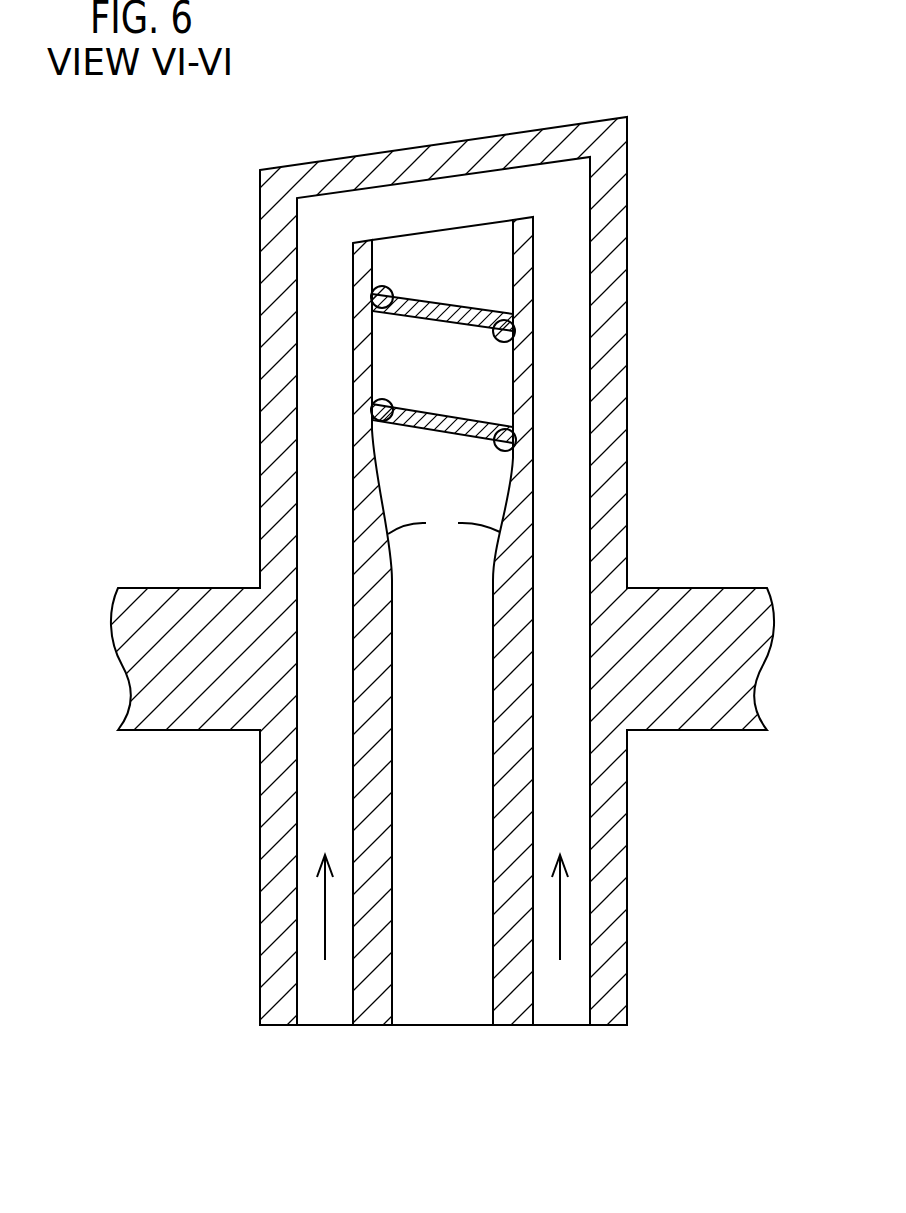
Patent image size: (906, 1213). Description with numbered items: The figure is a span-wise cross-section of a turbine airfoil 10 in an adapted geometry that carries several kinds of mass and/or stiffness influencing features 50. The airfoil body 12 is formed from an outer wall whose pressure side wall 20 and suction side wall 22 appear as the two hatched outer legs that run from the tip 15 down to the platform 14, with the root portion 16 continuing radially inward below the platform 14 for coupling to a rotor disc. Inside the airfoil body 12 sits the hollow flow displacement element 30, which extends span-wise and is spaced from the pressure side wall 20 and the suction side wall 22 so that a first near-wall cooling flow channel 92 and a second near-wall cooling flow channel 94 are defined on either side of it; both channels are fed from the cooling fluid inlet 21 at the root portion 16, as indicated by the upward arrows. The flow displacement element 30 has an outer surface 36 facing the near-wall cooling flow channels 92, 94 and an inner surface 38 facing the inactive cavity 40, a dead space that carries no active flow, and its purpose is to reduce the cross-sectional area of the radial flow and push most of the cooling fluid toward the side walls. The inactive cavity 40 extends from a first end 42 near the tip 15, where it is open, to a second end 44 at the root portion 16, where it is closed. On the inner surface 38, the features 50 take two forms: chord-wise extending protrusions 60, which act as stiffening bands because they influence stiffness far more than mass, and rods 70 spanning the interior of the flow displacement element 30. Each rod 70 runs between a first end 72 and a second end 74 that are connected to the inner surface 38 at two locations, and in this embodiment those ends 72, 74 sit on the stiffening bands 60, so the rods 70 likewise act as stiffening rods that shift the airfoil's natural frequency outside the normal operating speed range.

The turbine airfoil 10 is at (685, 72).
The airfoil body 12 is at (243, 220).
The platform 14 is at (700, 588).
The tip 15 is at (443, 143).
The root portion 16 is at (240, 862).
The pressure side wall 20 is at (627, 228).
The cooling fluid inlet 21 is at (325, 1027).
The suction side wall 22 is at (260, 278).
The flow displacement element 30 is at (540, 475).
The outer surface 36 is at (353, 468).
The inner surface 38 is at (444, 523).
The inactive cavity 40 is at (453, 738).
The first end 42 is at (443, 229).
The second end 44 is at (443, 1027).
The mass and/or stiffness influencing features 50 is at (370, 300).
The chord-wise extending protrusions 60 is at (513, 330).
The rods 70 is at (455, 317).
The first end 72 is at (387, 313).
The second end 74 is at (497, 333).
The first near-wall cooling flow channel 92 is at (563, 535).
The second near-wall cooling flow channel 94 is at (325, 510).